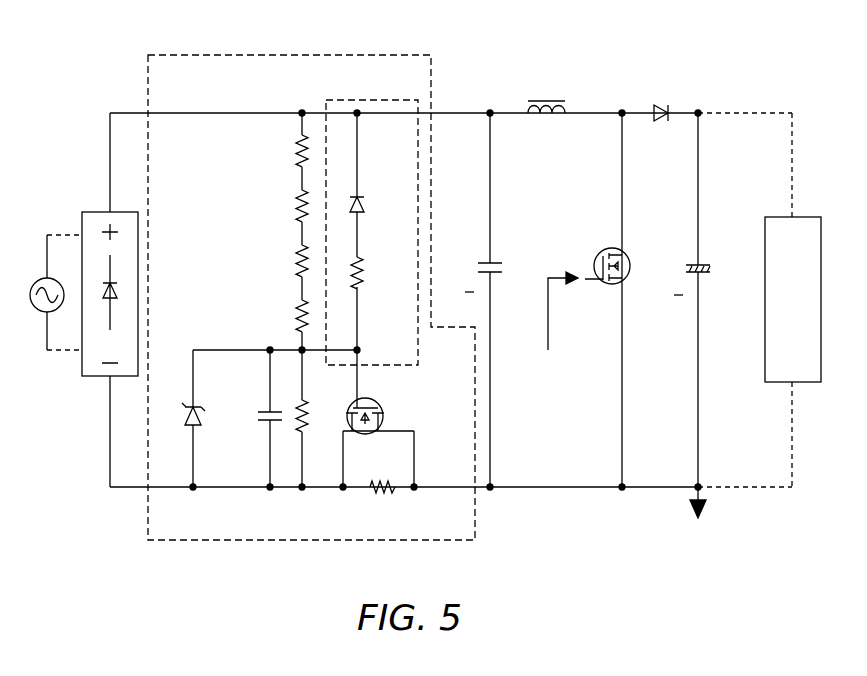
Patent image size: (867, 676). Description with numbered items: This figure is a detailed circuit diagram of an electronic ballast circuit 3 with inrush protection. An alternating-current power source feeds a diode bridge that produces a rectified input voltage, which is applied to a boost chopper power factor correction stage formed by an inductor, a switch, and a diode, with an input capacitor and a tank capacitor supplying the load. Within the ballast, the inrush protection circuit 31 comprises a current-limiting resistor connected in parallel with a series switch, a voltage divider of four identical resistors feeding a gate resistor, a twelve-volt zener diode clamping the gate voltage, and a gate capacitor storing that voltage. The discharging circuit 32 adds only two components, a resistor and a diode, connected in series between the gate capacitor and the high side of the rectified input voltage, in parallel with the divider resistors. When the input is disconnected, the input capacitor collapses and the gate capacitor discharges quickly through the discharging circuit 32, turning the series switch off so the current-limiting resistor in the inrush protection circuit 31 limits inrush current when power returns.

The power supply circuit 3 is at (112, 66).
The inrush protection circuit 31 is at (270, 55).
The discharging circuit 32 is at (372, 100).